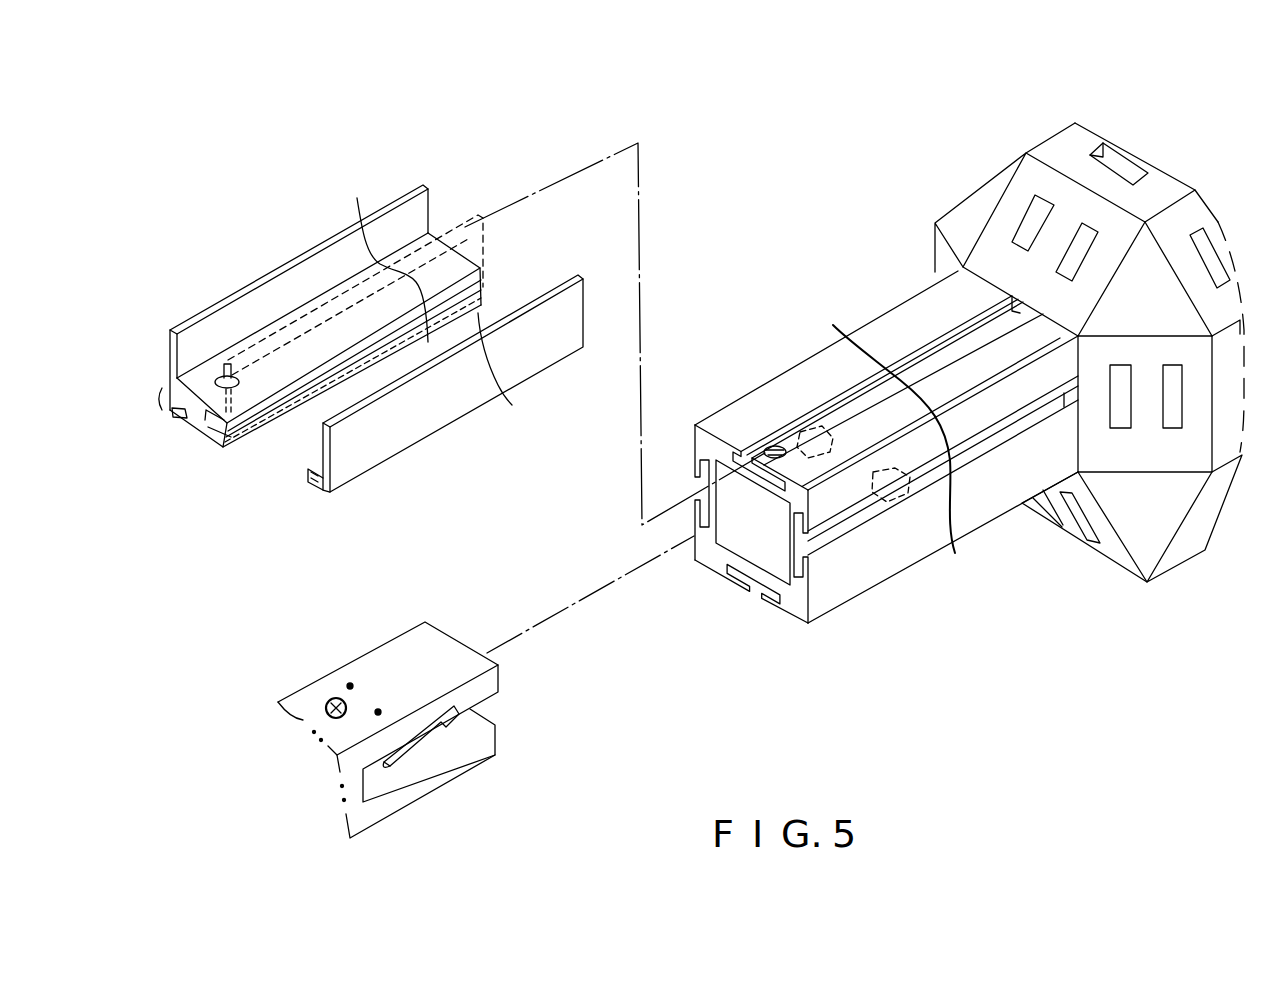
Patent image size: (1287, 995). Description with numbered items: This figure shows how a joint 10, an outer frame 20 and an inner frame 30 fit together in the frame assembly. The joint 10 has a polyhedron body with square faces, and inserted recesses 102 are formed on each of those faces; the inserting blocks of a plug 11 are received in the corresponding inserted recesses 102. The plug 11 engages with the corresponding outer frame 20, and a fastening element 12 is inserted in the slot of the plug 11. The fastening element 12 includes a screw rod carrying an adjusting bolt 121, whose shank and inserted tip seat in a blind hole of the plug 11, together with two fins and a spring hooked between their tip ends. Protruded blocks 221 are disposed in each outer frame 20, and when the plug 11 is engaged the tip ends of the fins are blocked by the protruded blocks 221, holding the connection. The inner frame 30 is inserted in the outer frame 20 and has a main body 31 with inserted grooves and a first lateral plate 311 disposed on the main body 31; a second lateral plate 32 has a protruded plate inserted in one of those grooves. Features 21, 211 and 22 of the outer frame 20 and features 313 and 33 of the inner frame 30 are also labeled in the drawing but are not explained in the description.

The joint 10 is at (1089, 358).
The inserted recess 102 is at (1115, 162).
The plug 11 is at (405, 761).
The fastening element 12 is at (418, 752).
The adjusting bolt 121 is at (333, 702).
The outer frame 20 is at (942, 595).
The T-slot lips of frame beam 21 is at (754, 590).
The hole in frame beam 211 is at (771, 446).
The central channel of frame beam 22 is at (760, 531).
The protruded block 221 is at (872, 463).
The inner frame 30 is at (345, 340).
The main body 31 is at (135, 399).
The first lateral plate 311 is at (260, 275).
The bolt 313 is at (222, 377).
The second lateral plate 32 is at (407, 424).
The sliding strip 33 is at (451, 201).